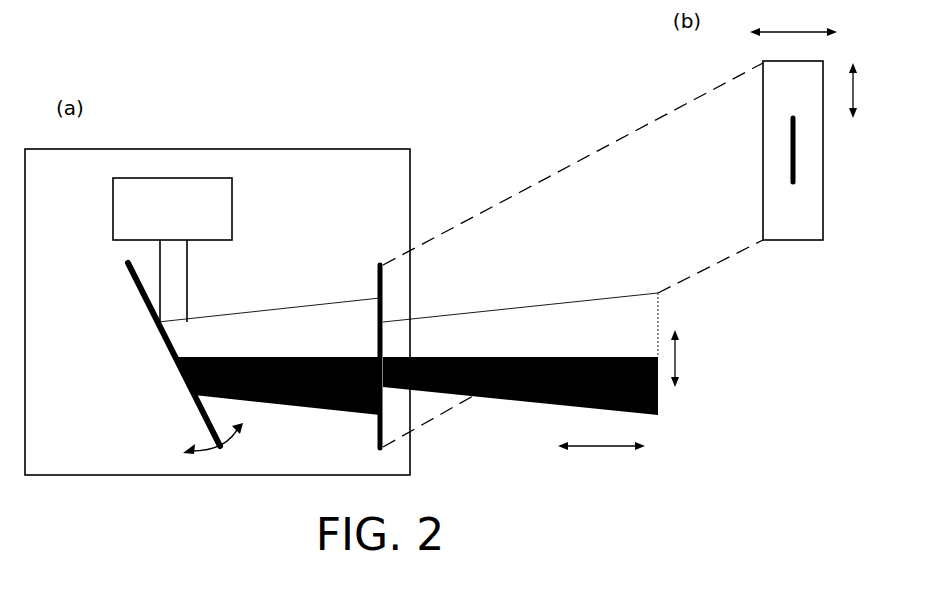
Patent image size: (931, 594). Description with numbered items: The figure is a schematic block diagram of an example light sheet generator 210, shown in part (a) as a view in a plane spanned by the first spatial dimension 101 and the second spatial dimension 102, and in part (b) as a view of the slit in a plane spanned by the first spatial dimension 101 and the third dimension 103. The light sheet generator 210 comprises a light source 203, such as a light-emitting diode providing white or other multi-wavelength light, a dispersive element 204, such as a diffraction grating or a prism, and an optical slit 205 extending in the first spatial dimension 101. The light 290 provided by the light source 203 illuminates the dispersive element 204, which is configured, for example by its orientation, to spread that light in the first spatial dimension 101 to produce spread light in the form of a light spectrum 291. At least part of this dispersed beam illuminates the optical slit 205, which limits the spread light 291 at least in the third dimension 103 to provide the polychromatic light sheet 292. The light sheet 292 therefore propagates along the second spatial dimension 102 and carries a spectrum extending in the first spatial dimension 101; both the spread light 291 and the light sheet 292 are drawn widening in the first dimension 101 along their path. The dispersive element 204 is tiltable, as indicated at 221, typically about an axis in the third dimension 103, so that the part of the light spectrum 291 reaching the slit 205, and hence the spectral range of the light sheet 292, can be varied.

The light sheet generator 210 is at (217, 312).
The light source 203 is at (172, 250).
The dispersive element 204 is at (137, 287).
The light provided by the light source 290 is at (188, 282).
The light spectrum 291 is at (261, 311).
The optical slit 205 is at (577, 254).
The polychromatic light sheet 292 is at (533, 307).
The tilting of the dispersive element 221 is at (227, 442).
The first spatial dimension 101 is at (786, 225).
The second spatial dimension 102 is at (601, 457).
The third dimension 103 is at (793, 21).